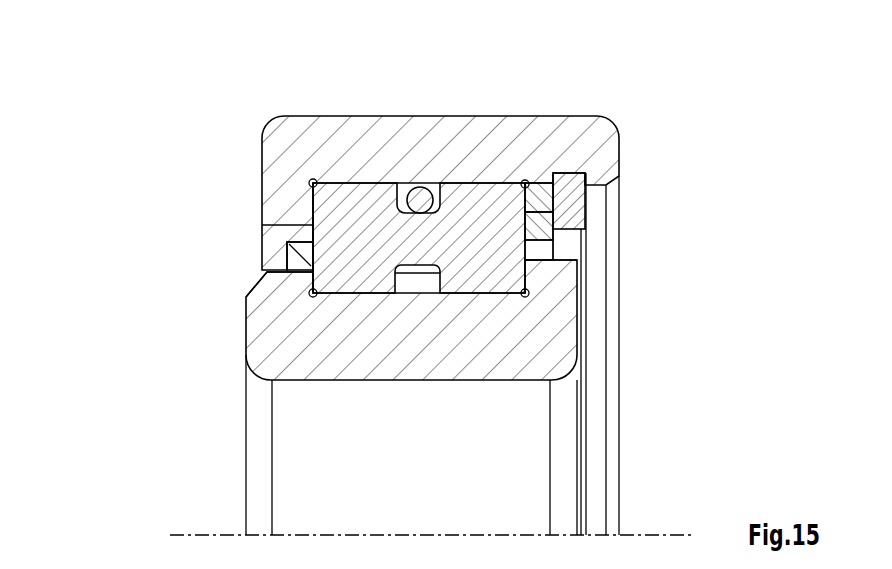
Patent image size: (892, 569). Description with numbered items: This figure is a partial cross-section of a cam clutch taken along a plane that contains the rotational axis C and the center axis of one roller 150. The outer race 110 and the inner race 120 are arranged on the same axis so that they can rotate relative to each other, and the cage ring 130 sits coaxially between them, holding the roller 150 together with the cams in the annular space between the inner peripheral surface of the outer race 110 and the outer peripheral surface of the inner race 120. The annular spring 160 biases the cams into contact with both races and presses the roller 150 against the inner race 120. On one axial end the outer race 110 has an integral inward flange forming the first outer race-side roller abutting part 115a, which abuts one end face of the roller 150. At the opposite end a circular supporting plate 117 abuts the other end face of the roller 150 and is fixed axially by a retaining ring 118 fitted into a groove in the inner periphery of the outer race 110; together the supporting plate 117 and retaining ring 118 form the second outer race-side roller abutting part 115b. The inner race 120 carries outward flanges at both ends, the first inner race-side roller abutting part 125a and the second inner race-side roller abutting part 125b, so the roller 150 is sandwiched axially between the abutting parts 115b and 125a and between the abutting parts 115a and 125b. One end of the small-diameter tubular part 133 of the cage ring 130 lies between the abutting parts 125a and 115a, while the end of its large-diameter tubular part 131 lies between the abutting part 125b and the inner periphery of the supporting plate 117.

The outer race 110 is at (263, 145).
The first outer race-side roller abutting part 115a is at (268, 227).
The second outer race-side roller abutting part 115b is at (560, 121).
The supporting plate 117 is at (540, 190).
The retaining ring 118 is at (568, 178).
The inner race 120 is at (537, 342).
The first inner race-side roller abutting part 125a is at (258, 283).
The second inner race-side roller abutting part 125b is at (555, 262).
The cage ring 130 is at (293, 237).
The large-diameter tubular part 131 is at (543, 222).
The small-diameter tubular part 133 is at (285, 257).
The roller 150 is at (370, 193).
The annular spring 160 is at (421, 193).
The rotational axis C is at (178, 535).